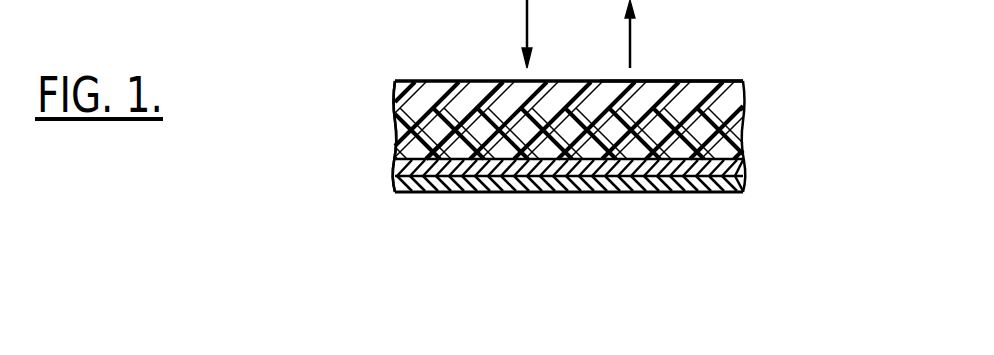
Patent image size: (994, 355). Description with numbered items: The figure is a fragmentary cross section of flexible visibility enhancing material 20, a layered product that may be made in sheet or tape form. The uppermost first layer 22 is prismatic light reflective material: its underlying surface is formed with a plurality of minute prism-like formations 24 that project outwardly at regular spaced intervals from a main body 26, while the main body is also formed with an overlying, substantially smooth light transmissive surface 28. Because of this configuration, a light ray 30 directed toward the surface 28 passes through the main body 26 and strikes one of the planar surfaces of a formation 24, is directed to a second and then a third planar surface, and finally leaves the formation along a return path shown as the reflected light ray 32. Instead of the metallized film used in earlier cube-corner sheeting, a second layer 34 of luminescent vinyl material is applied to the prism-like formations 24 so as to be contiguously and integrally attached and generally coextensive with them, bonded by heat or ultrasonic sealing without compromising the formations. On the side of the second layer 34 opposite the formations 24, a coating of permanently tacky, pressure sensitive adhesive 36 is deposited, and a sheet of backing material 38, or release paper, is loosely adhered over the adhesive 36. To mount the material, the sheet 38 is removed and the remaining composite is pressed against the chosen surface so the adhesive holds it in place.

The flexible visibility enhancing material 20 is at (778, 95).
The first layer 22 is at (388, 101).
The prism-like formations 24 is at (447, 121).
The main body 26 is at (440, 94).
The light transmissive surface 28 is at (707, 80).
The light ray 30 is at (527, 20).
The reflected light ray 32 is at (630, 42).
The second layer 34 is at (742, 138).
The adhesive layer 36 is at (742, 168).
The backing material 38 is at (742, 180).